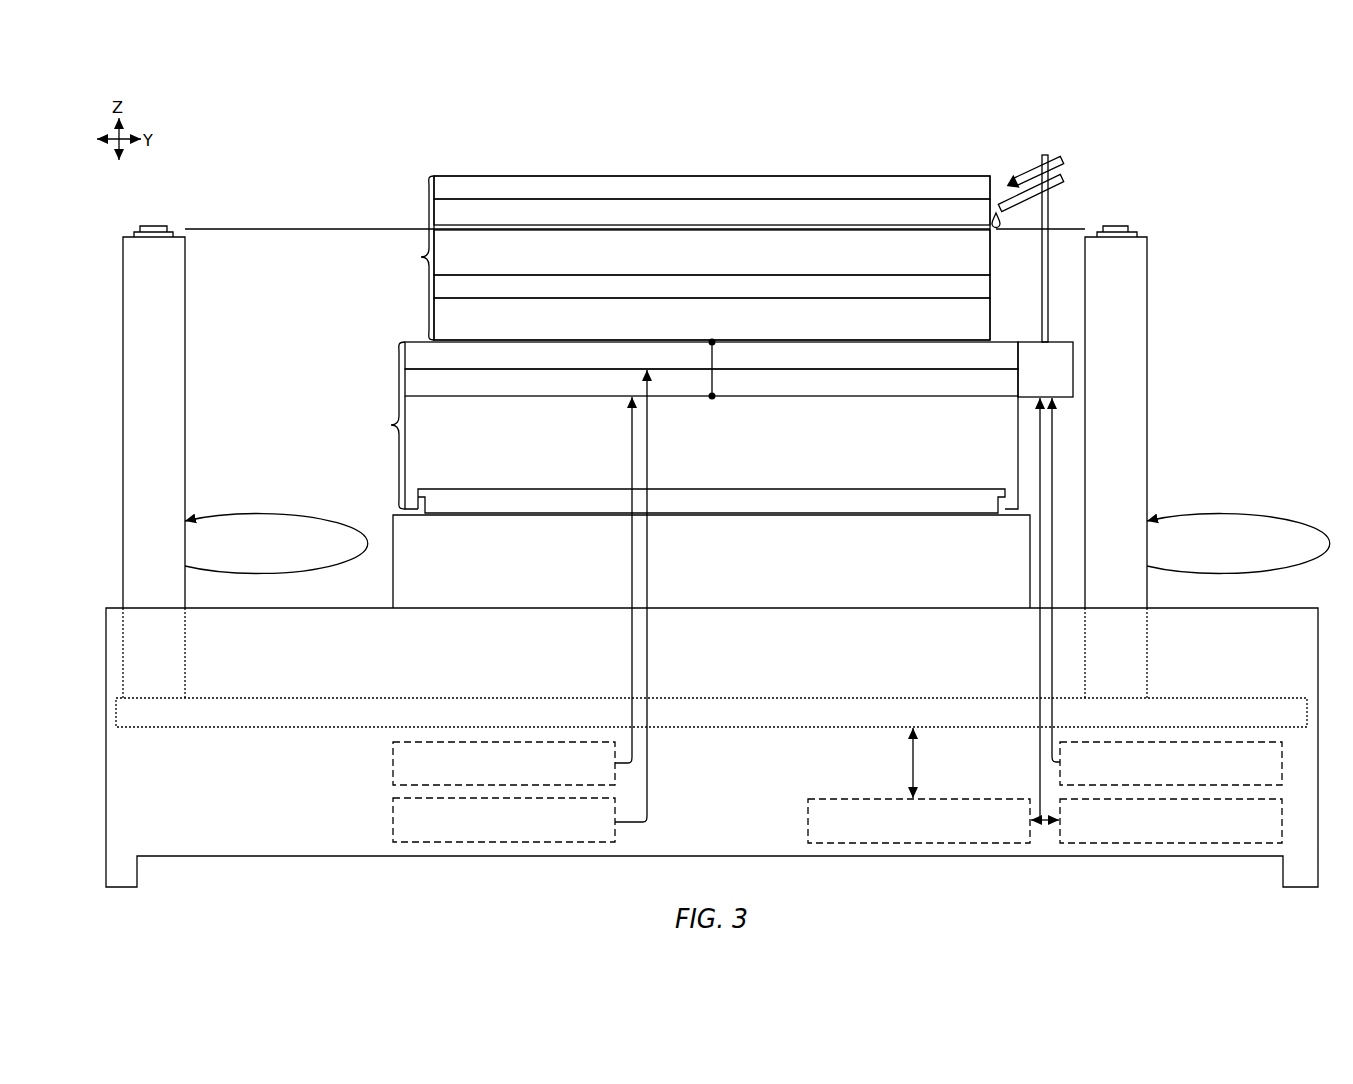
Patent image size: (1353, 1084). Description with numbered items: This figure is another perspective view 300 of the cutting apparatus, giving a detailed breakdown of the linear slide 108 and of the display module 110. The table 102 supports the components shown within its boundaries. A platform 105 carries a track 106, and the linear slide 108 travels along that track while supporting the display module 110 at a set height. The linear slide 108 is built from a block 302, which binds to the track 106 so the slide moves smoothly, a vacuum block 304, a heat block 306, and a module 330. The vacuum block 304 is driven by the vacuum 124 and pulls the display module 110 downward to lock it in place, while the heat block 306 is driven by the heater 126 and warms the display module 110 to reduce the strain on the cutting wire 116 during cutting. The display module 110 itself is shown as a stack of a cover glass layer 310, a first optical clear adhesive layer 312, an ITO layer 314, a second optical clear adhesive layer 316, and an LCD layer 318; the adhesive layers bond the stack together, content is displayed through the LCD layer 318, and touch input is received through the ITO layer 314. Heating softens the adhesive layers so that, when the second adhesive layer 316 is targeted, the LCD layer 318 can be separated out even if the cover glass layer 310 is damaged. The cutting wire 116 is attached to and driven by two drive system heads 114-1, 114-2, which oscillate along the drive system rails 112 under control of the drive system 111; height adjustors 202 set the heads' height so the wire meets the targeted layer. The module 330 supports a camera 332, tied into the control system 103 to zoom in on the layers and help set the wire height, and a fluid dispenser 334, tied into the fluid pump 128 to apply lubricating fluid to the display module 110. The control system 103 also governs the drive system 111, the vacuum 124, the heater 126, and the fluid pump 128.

The perspective view 300 is at (1241, 131).
The table 102 is at (712, 747).
The control system 103 is at (1156, 620).
The platform 105 is at (711, 561).
The track 106 is at (711, 501).
The linear slide 108 is at (331, 425).
The display module 110 is at (625, 258).
The drive system 111 is at (919, 785).
The drive system rails 112 is at (711, 712).
The drive system head 114-1 is at (245, 417).
The drive system head 114-2 is at (1207, 417).
The cutting wire 116 is at (324, 228).
The vacuum 124 is at (512, 591).
The heater 126 is at (520, 606).
The fluid pump 128 is at (1167, 591).
The height adjustors 202 is at (635, 653).
The block 302 is at (711, 452).
The vacuum block 304 is at (711, 382).
The heat block 306 is at (711, 355).
The cover glass layer 310 is at (712, 319).
The first optical clear adhesive (OCA) layer 312 is at (712, 286).
The ITO layer 314 is at (712, 252).
The second optical clear adhesive (OCA) layer 316 is at (712, 212).
The LCD layer 318 is at (712, 187).
The module 330 is at (1045, 369).
The camera 332 is at (1050, 167).
The fluid dispenser 334 is at (1052, 184).